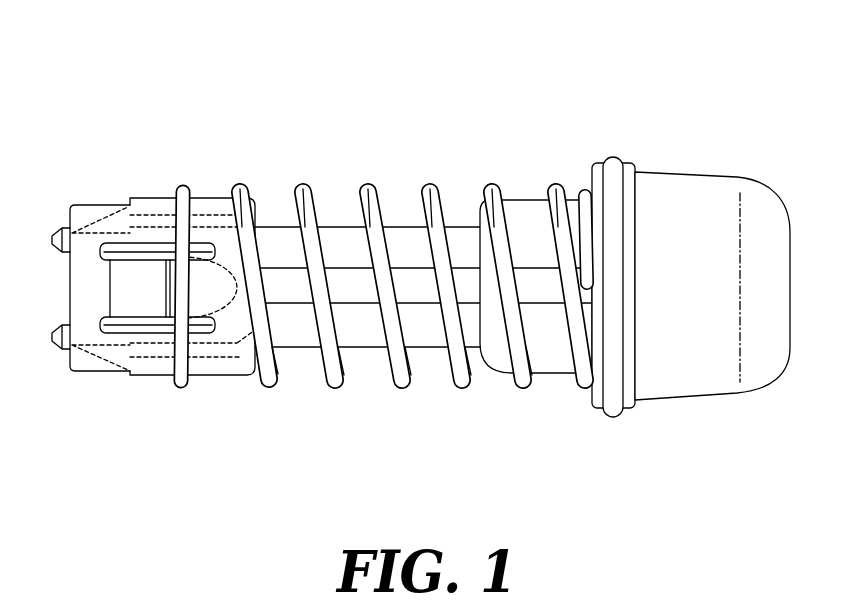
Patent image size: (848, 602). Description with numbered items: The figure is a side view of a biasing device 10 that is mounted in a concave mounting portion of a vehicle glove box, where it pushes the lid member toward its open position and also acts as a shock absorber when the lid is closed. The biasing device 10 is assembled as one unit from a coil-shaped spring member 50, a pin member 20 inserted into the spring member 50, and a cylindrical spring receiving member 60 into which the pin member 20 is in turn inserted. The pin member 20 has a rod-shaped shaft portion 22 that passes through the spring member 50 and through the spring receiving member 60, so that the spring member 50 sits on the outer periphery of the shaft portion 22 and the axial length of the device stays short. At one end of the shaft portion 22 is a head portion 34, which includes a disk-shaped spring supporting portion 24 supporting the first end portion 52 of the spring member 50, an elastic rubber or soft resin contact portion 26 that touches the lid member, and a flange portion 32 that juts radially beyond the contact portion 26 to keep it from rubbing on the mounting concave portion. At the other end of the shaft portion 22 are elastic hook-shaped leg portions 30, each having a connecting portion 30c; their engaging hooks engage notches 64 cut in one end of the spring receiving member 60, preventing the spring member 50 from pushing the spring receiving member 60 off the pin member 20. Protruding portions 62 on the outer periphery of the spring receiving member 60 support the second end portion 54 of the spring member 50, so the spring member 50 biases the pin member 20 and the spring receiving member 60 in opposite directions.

The biasing device 10 is at (412, 250).
The pin member 20 is at (522, 197).
The shaft portion 22 is at (400, 238).
The spring supporting portion 24 is at (592, 174).
The contact portion 26 is at (718, 183).
The leg portions 30 is at (158, 250).
The connecting portion 30c is at (50, 240).
The flange portion 32 is at (632, 243).
The head portion 34 is at (674, 223).
The spring member 50 is at (384, 272).
The first end portion 52 is at (585, 190).
The second end portion 54 is at (182, 345).
The spring receiving member 60 is at (143, 208).
The protruding portions 62 is at (145, 297).
The notches 64 is at (89, 204).